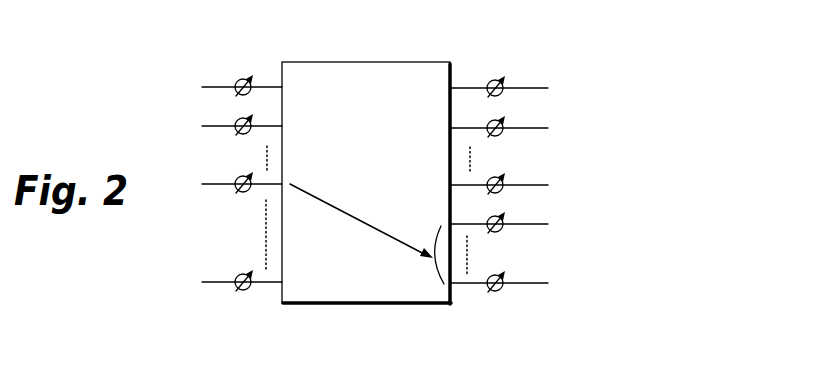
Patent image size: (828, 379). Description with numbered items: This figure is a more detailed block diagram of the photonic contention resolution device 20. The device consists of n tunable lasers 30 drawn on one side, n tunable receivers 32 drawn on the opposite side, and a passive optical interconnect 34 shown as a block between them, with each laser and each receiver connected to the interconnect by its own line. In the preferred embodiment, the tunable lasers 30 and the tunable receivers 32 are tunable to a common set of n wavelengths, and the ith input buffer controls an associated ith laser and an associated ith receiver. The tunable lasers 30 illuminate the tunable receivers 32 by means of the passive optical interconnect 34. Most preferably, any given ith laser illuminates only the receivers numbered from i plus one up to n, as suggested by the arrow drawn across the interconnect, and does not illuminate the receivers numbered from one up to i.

The photonic contention resolution device 20 is at (162, 59).
The tunable lasers 30 is at (225, 192).
The tunable receivers 32 is at (522, 197).
The passive optical interconnect 34 is at (393, 305).